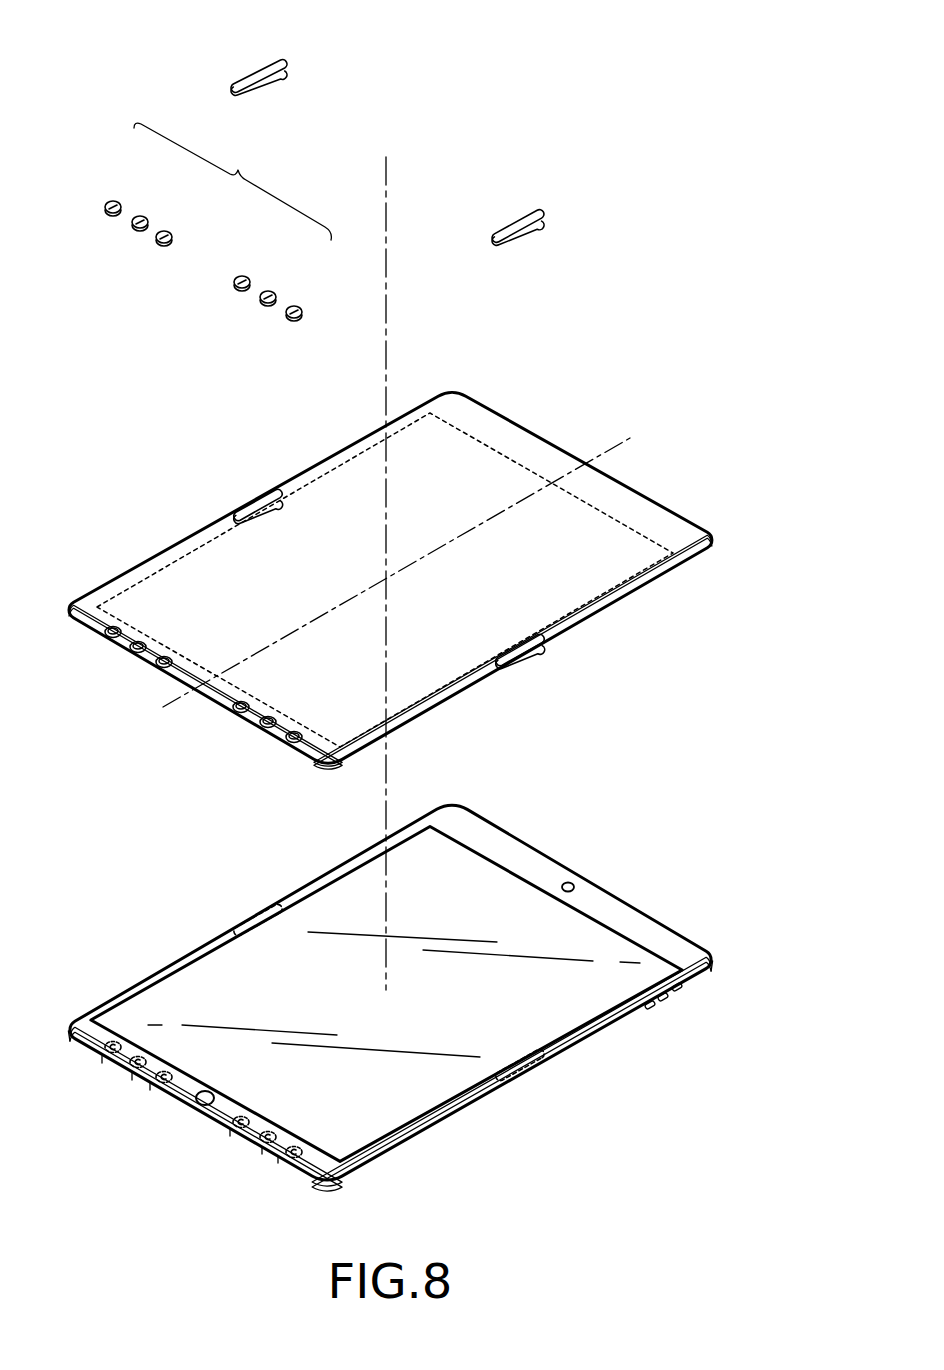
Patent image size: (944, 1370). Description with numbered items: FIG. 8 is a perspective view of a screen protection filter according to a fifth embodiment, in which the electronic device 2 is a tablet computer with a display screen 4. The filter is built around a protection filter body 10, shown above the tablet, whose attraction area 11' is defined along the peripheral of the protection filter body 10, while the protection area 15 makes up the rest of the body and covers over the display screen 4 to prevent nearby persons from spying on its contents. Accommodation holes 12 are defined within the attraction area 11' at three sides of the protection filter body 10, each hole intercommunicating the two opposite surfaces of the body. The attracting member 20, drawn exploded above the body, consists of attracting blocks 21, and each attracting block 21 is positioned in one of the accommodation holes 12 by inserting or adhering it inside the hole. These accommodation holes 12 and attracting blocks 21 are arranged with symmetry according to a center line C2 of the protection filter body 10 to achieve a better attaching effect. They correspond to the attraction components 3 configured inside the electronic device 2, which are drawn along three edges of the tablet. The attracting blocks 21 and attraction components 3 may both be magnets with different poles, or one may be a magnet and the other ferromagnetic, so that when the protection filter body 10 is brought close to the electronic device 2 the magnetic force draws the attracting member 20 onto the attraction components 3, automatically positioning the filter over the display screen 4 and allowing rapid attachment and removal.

The electronic device 2 is at (390, 1015).
The attraction components 3 is at (464, 1160).
The display screen 4 is at (573, 995).
The protection filter body 10 is at (401, 603).
The attraction area 11' is at (385, 567).
The accommodation holes 12 is at (312, 628).
The protection area 15 is at (602, 570).
The attracting member 20 is at (324, 163).
The attracting blocks 21 is at (324, 163).
The center line C2 is at (413, 560).